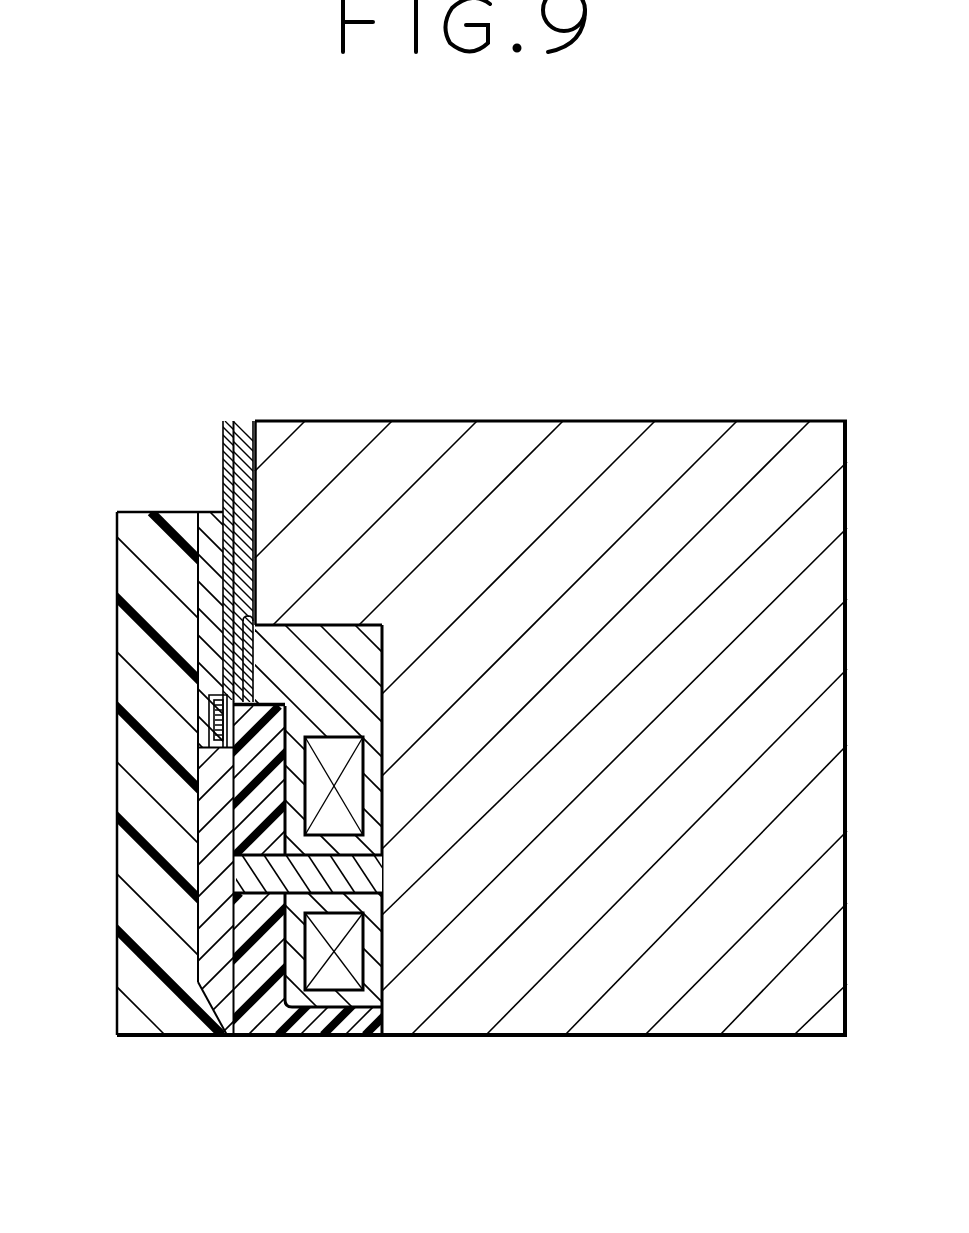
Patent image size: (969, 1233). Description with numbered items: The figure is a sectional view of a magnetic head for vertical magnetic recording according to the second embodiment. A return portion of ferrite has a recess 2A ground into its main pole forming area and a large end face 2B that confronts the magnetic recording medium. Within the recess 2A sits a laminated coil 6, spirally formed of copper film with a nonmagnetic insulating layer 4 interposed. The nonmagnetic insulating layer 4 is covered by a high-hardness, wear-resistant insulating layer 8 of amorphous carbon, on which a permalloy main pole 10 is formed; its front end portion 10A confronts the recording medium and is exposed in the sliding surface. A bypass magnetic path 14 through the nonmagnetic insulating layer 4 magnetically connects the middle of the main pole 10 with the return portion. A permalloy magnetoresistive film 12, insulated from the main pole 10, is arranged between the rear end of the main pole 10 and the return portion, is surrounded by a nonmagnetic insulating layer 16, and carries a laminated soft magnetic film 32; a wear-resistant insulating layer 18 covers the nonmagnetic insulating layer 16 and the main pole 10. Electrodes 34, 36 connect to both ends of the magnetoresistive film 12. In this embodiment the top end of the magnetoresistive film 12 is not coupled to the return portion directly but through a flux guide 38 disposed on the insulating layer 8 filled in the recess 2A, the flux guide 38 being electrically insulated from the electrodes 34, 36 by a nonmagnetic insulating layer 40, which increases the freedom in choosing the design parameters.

The recess 2A is at (382, 689).
The end face 2B is at (650, 1037).
The nonmagnetic insulating layer 4 is at (368, 645).
The laminated coil 6 is at (352, 785).
The wear-resistant insulating layer 8 is at (290, 1038).
The main pole 10 is at (200, 821).
The front end portion 10A is at (227, 1038).
The magnetoresistive film 12 is at (213, 692).
The bypass magnetic path 14 is at (258, 875).
The nonmagnetic insulating layer 16 is at (210, 518).
The wear-resistant insulating layer 18 is at (147, 1002).
The soft magnetic film 32 is at (215, 720).
The electrode 34 is at (256, 499).
The electrode 36 is at (213, 421).
The flux guide 38 is at (243, 612).
The nonmagnetic insulating layer 40 is at (248, 421).